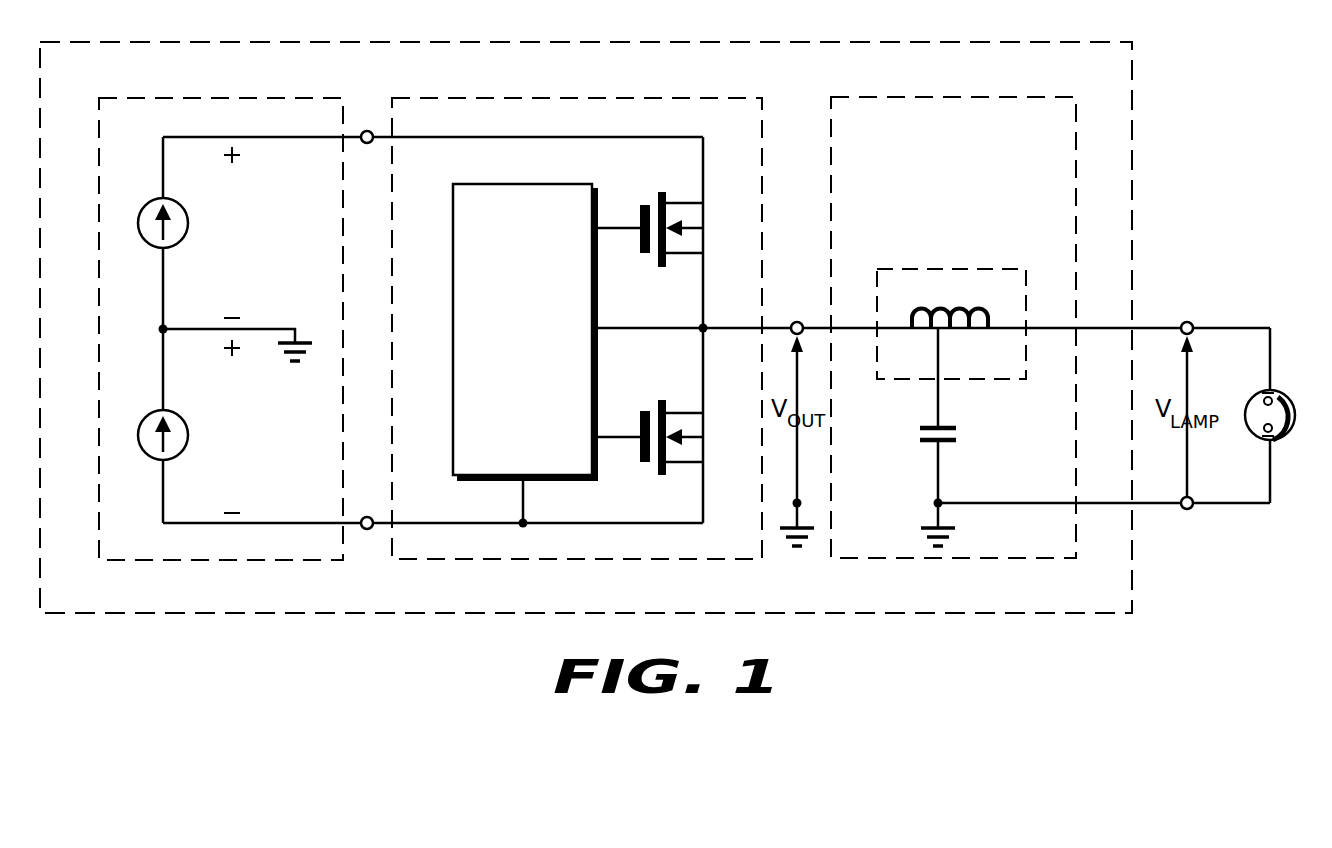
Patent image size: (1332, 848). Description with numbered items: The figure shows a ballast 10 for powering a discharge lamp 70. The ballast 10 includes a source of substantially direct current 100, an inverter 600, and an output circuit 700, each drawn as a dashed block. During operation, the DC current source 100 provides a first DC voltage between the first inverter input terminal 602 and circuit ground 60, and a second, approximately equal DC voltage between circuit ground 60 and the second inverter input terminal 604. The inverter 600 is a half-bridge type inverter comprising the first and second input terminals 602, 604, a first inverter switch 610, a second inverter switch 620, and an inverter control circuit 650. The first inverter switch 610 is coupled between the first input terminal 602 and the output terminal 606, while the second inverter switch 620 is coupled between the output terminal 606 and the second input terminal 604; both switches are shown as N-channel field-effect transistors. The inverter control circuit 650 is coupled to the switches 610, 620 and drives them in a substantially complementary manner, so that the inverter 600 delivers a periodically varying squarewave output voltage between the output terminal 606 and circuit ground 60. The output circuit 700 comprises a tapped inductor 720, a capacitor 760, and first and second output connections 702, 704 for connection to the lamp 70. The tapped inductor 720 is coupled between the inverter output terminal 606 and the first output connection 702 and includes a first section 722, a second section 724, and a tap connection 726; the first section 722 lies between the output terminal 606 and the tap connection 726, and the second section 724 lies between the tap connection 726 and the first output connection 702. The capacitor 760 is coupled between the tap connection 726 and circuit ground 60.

The ballast 10 is at (1017, 42).
The source of substantially direct current 100 is at (238, 98).
The inverter 600 is at (558, 98).
The first inverter input terminal 602 is at (365, 131).
The second inverter input terminal 604 is at (365, 530).
The inverter output terminal 606 is at (797, 322).
The first inverter switch 610 is at (707, 227).
The second inverter switch 620 is at (707, 437).
The inverter control circuit 650 is at (522, 184).
The output circuit 700 is at (968, 97).
The tapped inductor 720 is at (974, 329).
The first section 722 is at (930, 312).
The second section 724 is at (958, 312).
The tap connection 726 is at (938, 356).
The capacitor 760 is at (948, 428).
The circuit ground 60 is at (950, 534).
The first output connection 702 is at (1192, 322).
The second output connection 704 is at (1190, 509).
The discharge lamp 70 is at (1293, 418).